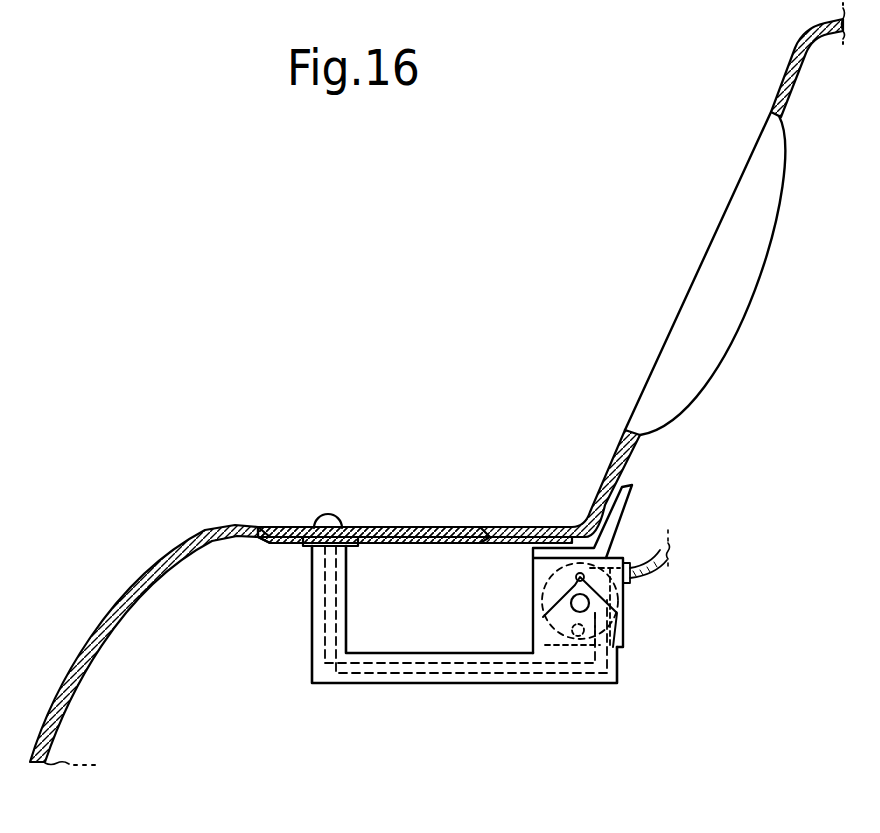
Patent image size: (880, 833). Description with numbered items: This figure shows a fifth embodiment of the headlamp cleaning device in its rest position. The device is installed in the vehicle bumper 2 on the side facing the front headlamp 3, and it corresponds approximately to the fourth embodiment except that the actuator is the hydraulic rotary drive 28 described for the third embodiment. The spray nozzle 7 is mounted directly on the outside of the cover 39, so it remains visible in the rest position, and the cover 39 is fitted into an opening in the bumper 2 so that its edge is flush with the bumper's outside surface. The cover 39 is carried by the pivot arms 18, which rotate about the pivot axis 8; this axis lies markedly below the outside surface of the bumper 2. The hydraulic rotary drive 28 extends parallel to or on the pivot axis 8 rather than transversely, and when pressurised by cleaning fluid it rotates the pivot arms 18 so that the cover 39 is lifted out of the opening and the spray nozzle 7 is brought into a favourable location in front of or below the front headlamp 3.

The bumper 2 is at (165, 565).
The front headlamp 3 is at (668, 323).
The spray nozzle 7 is at (343, 522).
The pivot axis 8 is at (572, 601).
The pivot arms 18 is at (354, 684).
The hydraulic rotary drive 28 is at (632, 600).
The cover 39 is at (425, 527).